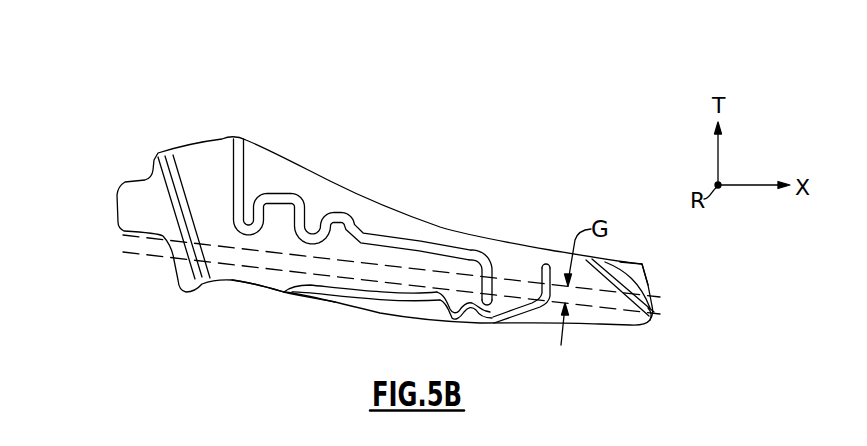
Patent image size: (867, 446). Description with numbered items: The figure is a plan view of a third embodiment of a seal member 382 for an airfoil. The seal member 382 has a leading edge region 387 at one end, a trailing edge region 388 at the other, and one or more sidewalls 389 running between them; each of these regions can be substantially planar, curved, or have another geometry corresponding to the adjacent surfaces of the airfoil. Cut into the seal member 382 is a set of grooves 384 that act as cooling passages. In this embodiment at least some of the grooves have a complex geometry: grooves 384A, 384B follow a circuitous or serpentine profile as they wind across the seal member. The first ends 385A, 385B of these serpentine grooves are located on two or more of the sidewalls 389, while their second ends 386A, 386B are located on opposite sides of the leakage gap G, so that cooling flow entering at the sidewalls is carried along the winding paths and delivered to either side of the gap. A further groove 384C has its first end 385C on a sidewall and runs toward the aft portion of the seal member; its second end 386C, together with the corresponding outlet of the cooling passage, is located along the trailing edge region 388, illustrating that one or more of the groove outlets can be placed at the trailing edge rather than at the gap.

The seal member 382 is at (130, 120).
The leading edge region 387 is at (154, 175).
The first end of groove 385A is at (237, 139).
The groove 384A is at (348, 213).
The groove 384 is at (421, 307).
The sidewall 389 is at (480, 236).
The second end of groove 386B is at (551, 266).
The first end of groove 385C is at (598, 258).
The groove 384C is at (643, 265).
The trailing edge region 388 is at (650, 288).
The second end of groove 386C is at (655, 316).
The second end of groove 386A is at (486, 258).
The groove 384B is at (363, 298).
The first end of groove 385B is at (285, 293).